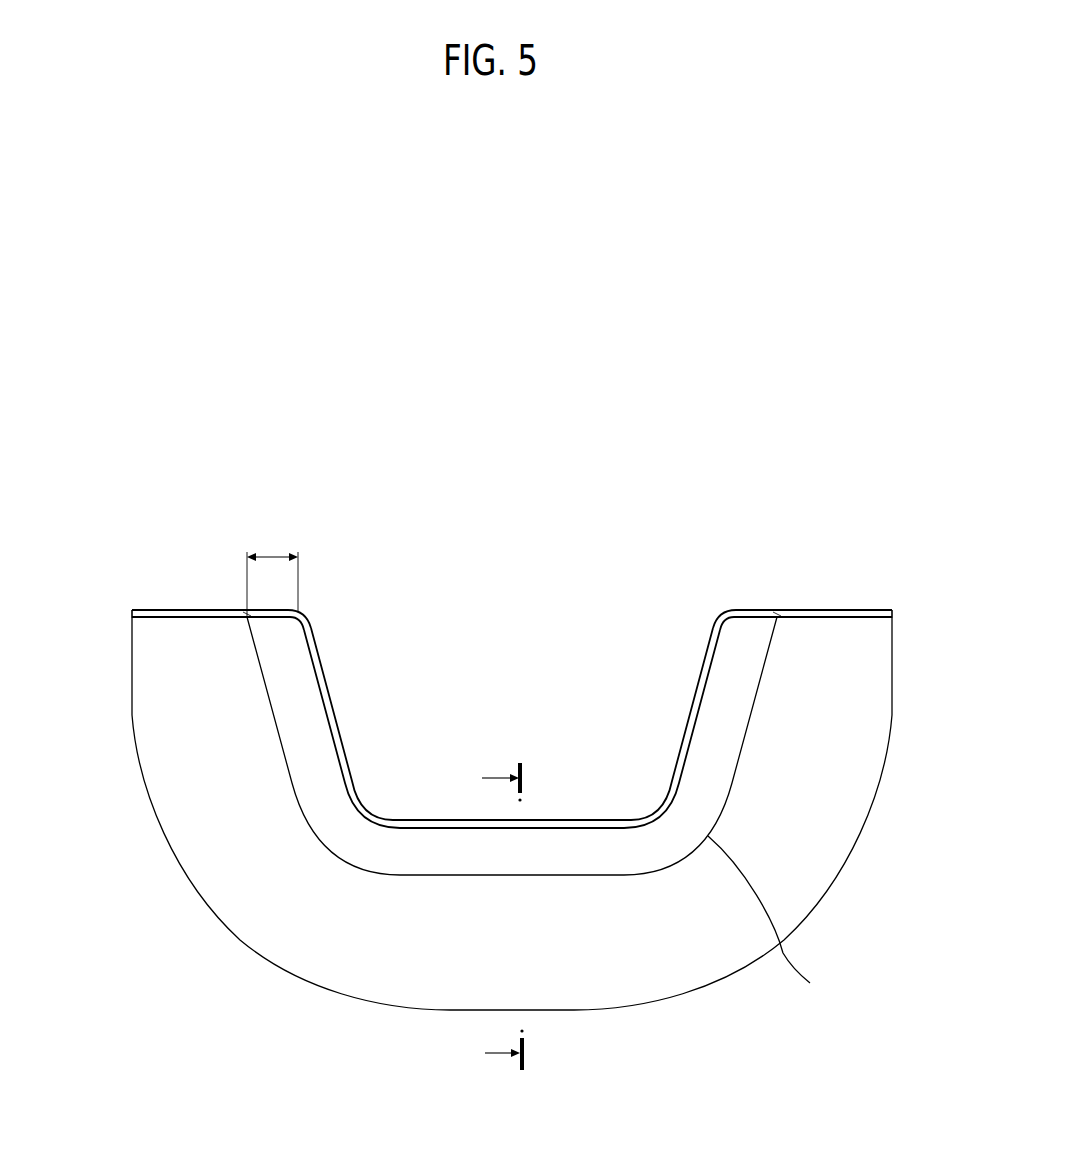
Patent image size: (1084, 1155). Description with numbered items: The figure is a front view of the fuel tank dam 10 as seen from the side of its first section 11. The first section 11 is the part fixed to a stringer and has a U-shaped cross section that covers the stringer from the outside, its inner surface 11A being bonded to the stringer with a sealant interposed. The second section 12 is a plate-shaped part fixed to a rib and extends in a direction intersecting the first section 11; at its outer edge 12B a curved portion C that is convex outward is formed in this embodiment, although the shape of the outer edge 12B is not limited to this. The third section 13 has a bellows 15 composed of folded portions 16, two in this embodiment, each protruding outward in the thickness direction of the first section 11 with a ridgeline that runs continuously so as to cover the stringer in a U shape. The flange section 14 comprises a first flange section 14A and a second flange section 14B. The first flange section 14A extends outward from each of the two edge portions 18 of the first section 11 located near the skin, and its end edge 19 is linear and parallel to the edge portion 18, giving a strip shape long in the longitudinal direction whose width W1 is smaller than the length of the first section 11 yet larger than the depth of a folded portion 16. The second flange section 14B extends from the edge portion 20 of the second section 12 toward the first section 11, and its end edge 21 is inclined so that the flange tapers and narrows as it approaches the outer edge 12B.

The fuel tank dam 10 is at (855, 476).
The first section 11 is at (572, 829).
The inner surface 11A is at (435, 819).
The second section 12 is at (850, 803).
The outer edge 12B is at (830, 911).
The third section 13 is at (771, 921).
The flange section 14 is at (521, 648).
The first flange section 14A is at (272, 607).
The second flange section 14B is at (153, 611).
The bellows 15 is at (521, 648).
The folded portion 16 is at (521, 648).
The edge portion 18 is at (305, 624).
The end edge 19 is at (237, 616).
The edge portion 20 is at (140, 628).
The end edge 21 is at (175, 618).
The width of the first flange section W1 is at (272, 556).
The curved portion C is at (752, 978).